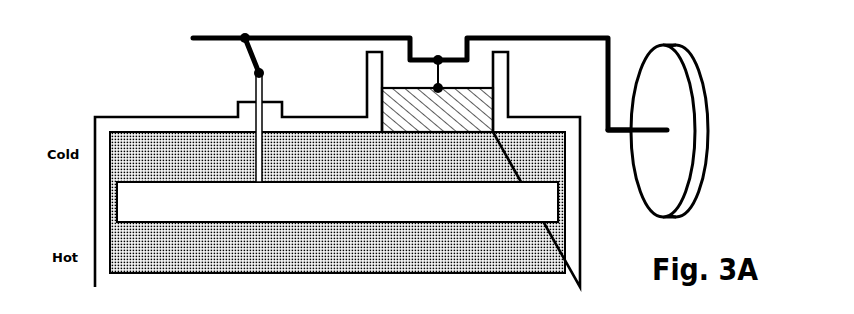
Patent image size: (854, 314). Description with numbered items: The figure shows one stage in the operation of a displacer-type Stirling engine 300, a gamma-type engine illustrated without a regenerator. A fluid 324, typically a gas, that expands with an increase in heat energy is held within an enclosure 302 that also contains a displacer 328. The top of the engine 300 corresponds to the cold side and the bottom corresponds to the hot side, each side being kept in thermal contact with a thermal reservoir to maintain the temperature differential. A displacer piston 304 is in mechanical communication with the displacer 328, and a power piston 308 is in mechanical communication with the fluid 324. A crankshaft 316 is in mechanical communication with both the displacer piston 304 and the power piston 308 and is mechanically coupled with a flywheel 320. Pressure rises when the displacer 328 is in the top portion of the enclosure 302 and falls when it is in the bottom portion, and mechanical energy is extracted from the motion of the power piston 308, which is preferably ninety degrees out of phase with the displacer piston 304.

The displacer-type Stirling engine 300 is at (421, 149).
The enclosure 302 is at (582, 272).
The displacer piston 304 is at (253, 98).
The power piston 308 is at (386, 103).
The crankshaft 316 is at (295, 35).
The flywheel 320 is at (697, 62).
The fluid 324 is at (163, 162).
The displacer 328 is at (328, 212).